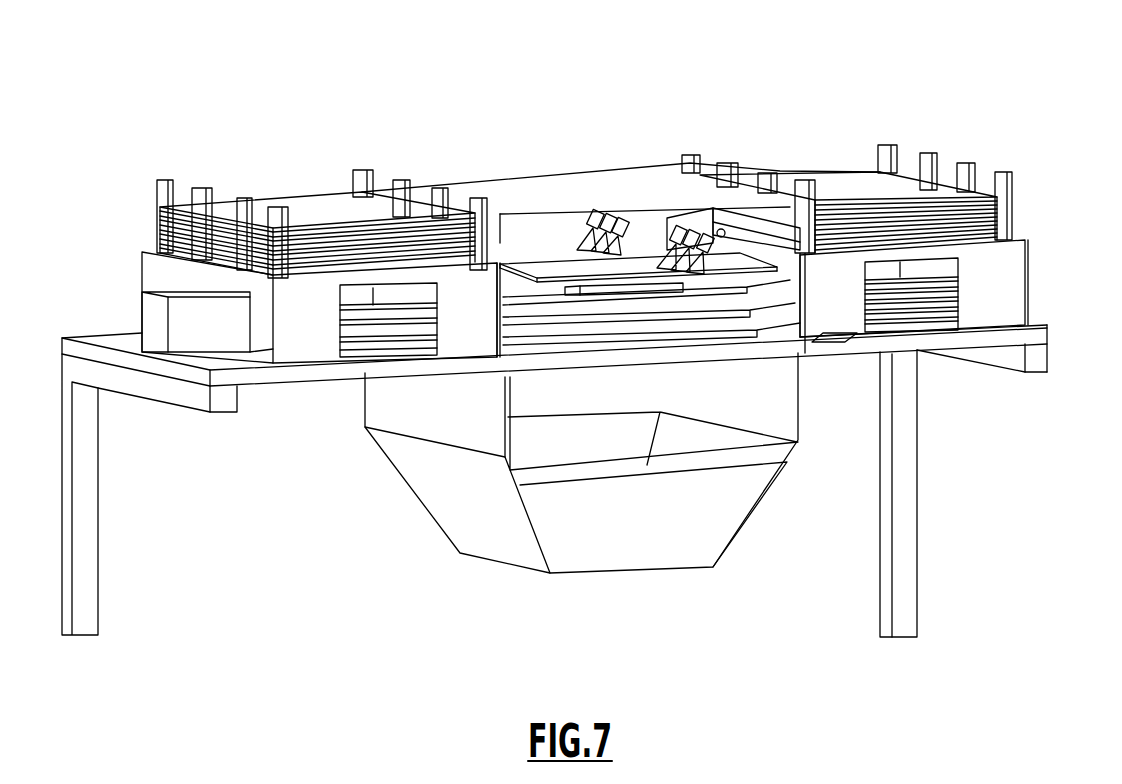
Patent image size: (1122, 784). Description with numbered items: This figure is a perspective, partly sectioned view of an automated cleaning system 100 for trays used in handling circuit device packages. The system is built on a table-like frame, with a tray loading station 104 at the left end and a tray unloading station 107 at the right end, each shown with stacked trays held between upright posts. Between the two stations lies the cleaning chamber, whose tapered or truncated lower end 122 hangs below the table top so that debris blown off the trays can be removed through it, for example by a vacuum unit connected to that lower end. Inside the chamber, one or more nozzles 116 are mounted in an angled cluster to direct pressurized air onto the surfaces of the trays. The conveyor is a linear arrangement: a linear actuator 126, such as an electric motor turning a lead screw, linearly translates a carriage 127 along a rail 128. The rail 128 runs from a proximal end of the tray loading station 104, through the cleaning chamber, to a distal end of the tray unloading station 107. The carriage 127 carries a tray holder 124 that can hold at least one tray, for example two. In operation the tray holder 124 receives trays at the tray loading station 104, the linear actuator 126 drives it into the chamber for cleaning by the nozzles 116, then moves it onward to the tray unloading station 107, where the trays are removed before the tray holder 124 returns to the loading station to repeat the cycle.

The automated cleaning system 100 is at (1030, 85).
The tray loading station 104 is at (230, 163).
The tray unloading station 107 is at (1017, 168).
The nozzles 116 is at (697, 222).
The tapered lower end 122 is at (672, 538).
The tray holder 124 is at (562, 262).
The linear actuator 126 is at (190, 327).
The carriage 127 is at (648, 292).
The rail 128 is at (543, 325).